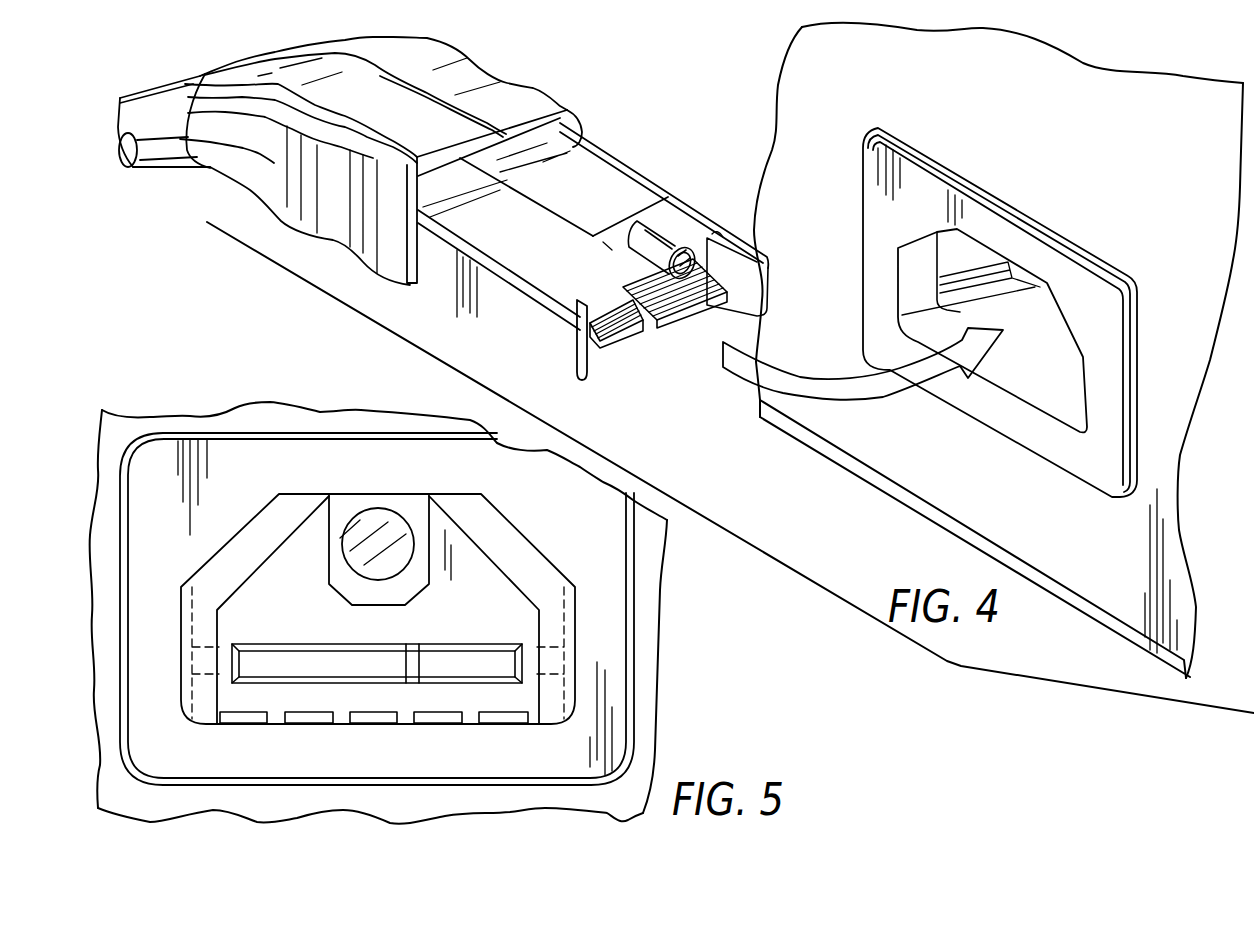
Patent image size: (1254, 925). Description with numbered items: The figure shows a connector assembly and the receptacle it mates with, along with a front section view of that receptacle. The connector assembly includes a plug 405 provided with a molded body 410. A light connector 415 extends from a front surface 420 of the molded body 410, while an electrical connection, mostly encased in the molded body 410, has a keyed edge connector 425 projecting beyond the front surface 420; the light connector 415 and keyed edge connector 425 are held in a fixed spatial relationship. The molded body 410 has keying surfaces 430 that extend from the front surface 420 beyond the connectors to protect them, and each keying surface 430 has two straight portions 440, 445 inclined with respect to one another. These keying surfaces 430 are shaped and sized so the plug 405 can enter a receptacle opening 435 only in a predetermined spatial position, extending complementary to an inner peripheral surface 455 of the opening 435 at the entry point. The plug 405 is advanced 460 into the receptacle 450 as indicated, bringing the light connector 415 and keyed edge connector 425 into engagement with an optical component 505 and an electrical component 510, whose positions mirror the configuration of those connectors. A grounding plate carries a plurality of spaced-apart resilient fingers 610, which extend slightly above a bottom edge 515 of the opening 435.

In FIG. 4, the plug 405 is at (598, 44).
In FIG. 4, the molded body 410 is at (615, 130).
In FIG. 4, the light connector 415 is at (652, 242).
In FIG. 4, the front surface 420 is at (614, 227).
In FIG. 4, the keyed edge connector 425 is at (680, 322).
In FIG. 4, the keying surfaces 430 is at (570, 296).
In FIG. 4, the receptacle opening 435 is at (1050, 432).
In FIG. 4, the straight portion 440 is at (612, 284).
In FIG. 4, the straight portion 445 is at (769, 287).
In FIG. 4, the receptacle 450 is at (955, 158).
In FIG. 4, the inner peripheral surface 455 is at (917, 262).
In FIG. 4, the advancement of the plug 460 is at (897, 386).
In FIG. 5, the optical component 505 is at (403, 521).
In FIG. 5, the electrical component 510 is at (376, 668).
In FIG. 5, the bottom edge 515 is at (273, 723).
In FIG. 5, the resilient fingers 610 is at (441, 721).